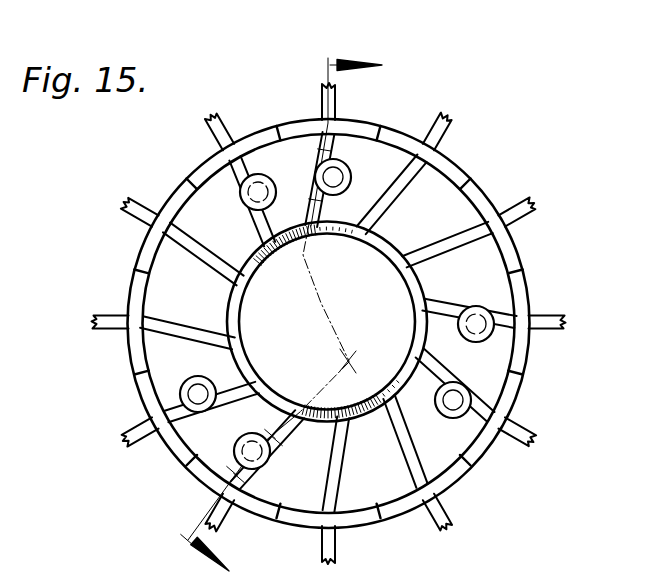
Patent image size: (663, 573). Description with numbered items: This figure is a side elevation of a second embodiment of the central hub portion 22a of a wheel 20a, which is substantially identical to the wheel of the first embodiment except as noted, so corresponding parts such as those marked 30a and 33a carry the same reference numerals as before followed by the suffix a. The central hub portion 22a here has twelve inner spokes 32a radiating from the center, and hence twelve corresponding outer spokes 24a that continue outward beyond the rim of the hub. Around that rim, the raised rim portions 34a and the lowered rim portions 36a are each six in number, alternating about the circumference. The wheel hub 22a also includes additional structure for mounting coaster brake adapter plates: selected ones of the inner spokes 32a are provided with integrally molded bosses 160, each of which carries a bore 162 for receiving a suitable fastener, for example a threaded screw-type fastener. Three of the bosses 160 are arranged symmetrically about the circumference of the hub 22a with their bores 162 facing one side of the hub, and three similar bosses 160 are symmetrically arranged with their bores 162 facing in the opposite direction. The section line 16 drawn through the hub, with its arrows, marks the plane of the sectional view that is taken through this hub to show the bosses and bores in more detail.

The section line 16- 16 is at (271, 293).
The wheel 20a is at (157, 189).
The central hub portion 22a is at (113, 272).
The outer spokes 24a is at (337, 110).
The hub 30a is at (386, 269).
The inner spokes 32a is at (192, 306).
The hub bore 33a is at (304, 350).
The raised rim portions 34a is at (458, 168).
The lowered rim portions 36a is at (282, 127).
The bosses 160 is at (498, 287).
The bores 162 is at (459, 334).